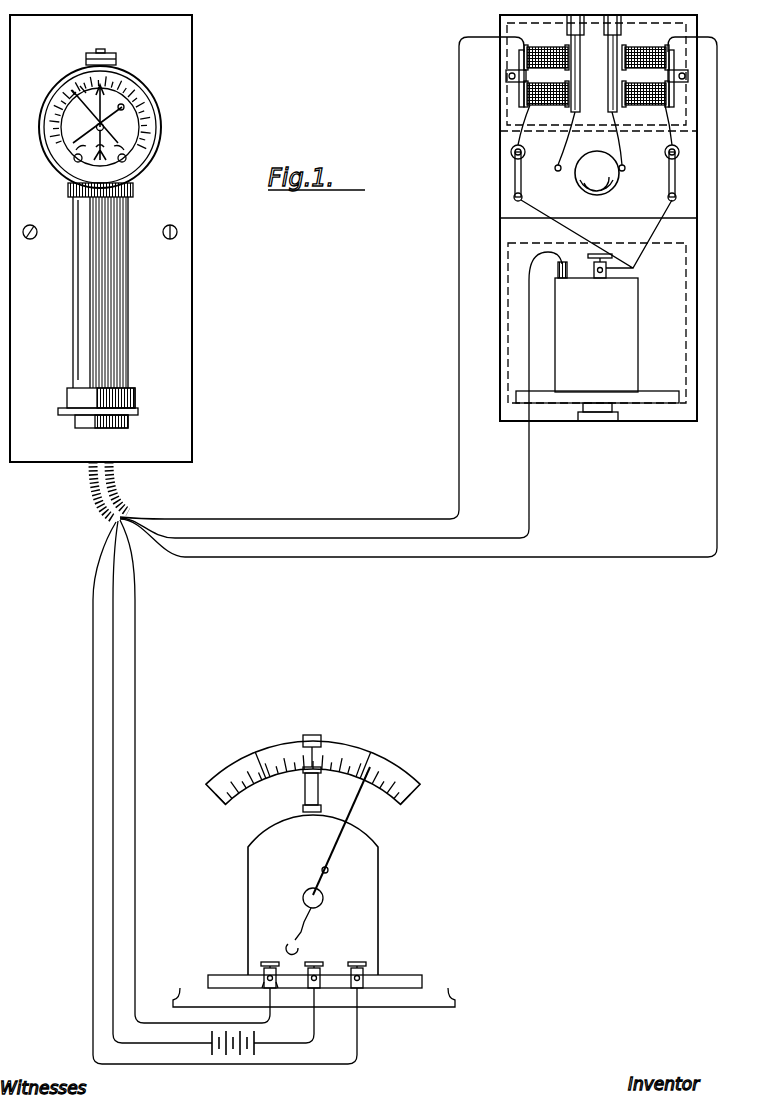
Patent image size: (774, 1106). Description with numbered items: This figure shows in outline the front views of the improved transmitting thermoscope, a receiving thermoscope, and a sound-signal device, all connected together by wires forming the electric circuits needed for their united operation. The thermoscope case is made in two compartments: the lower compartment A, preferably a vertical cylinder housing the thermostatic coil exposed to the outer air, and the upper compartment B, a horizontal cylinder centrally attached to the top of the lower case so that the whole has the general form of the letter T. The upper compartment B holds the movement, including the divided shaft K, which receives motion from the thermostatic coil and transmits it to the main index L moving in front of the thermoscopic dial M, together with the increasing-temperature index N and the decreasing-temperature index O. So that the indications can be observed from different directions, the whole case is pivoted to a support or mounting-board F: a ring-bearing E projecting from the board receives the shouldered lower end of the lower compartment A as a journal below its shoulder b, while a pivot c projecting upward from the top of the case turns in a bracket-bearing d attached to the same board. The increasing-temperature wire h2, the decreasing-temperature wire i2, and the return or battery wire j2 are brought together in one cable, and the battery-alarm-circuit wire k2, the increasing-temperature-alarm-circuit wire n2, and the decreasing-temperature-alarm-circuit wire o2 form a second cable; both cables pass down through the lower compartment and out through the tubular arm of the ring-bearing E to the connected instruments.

The pivot c is at (100, 44).
The bracket-bearing d is at (107, 54).
The decreasing-temperature index O is at (32, 137).
The increasing-temperature index N is at (82, 112).
The main index L is at (103, 106).
The divided shaft K is at (98, 124).
The thermoscopic dial M is at (100, 156).
The lower compartment A is at (94, 285).
The mounting-board F is at (101, 238).
The shoulder b is at (66, 410).
The ring-bearing E is at (128, 424).
The increasing-temperature wire h2 is at (322, 278).
The return or battery wire j2 is at (341, 395).
The decreasing-temperature wire i2 is at (418, 308).
The increasing-temperature-alarm-circuit wire n2 is at (216, 793).
The battery-alarm-circuit wire k2 is at (213, 782).
The decreasing-temperature-alarm-circuit wire o2 is at (195, 771).
The upper compartment B is at (233, 1062).